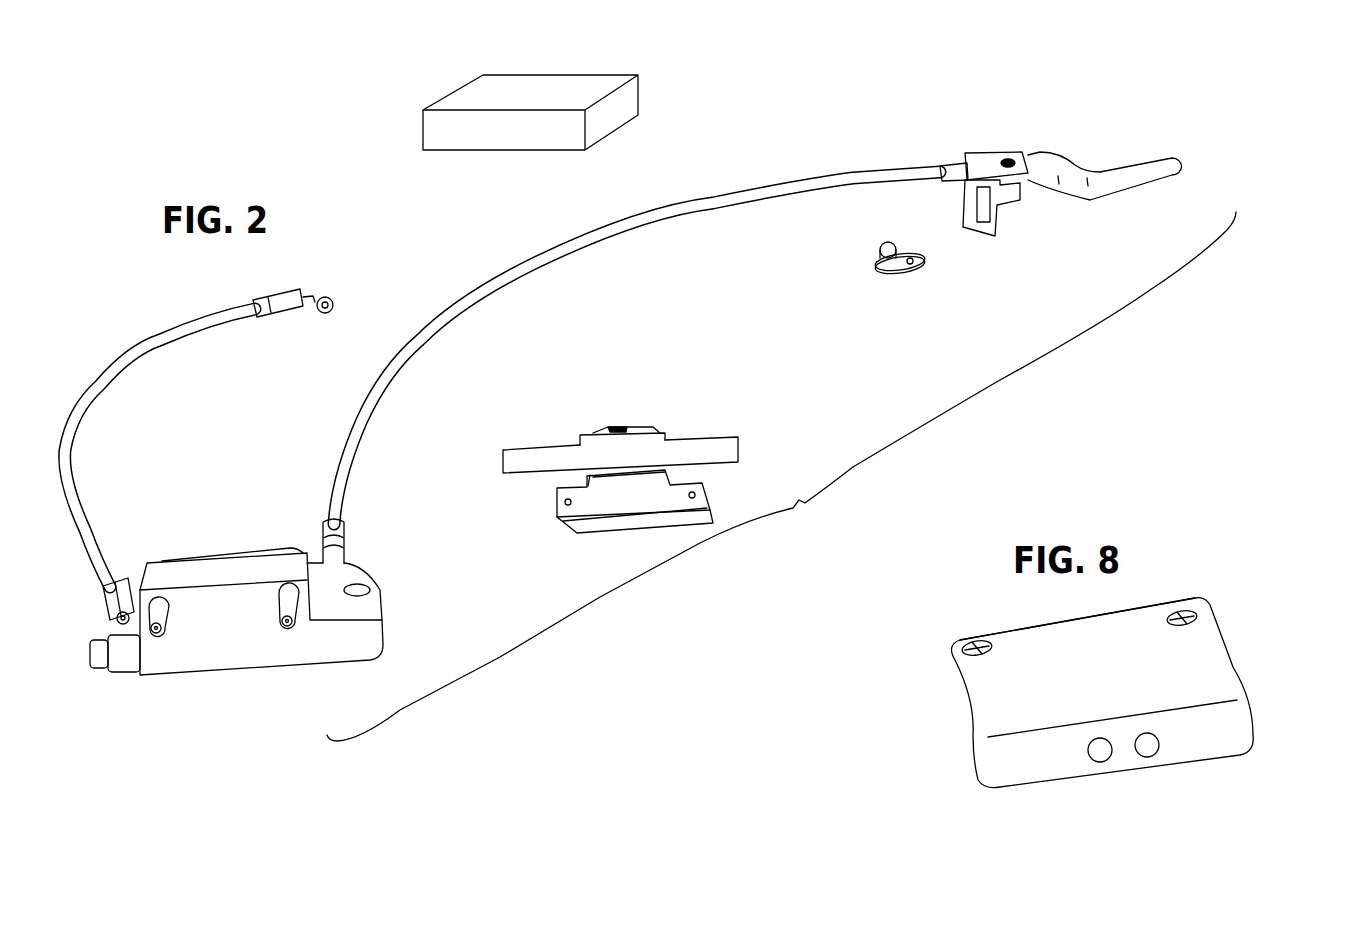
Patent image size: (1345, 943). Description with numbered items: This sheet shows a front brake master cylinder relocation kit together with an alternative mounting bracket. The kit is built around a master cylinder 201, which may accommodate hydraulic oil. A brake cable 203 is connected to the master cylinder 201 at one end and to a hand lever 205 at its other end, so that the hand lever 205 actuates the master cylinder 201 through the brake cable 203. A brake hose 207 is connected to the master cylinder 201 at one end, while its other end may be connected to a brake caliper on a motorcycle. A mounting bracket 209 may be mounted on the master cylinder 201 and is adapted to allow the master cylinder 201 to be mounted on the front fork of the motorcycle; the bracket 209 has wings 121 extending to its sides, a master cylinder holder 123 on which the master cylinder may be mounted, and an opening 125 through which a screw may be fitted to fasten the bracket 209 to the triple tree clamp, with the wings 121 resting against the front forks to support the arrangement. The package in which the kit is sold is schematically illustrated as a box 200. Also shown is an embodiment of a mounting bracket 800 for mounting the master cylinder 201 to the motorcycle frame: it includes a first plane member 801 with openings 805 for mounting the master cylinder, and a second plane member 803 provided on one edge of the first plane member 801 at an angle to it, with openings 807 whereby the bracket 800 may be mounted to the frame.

In FIG. 2, the box 200 is at (607, 120).
In FIG. 2, the master cylinder 201 is at (233, 643).
In FIG. 2, the brake cable 203 is at (488, 287).
In FIG. 2, the hand lever 205 is at (1073, 188).
In FIG. 2, the brake hose 207 is at (192, 335).
In FIG. 2, the mounting bracket 209 is at (648, 443).
In FIG. 2, the wings 121 is at (513, 453).
In FIG. 2, the master cylinder holder 123 is at (562, 523).
In FIG. 2, the opening 125 is at (618, 427).
In FIG. 8, the mounting bracket 800 is at (1247, 770).
In FIG. 8, the first plane member 801 is at (1090, 657).
In FIG. 8, the second plane member 803 is at (1028, 763).
In FIG. 8, the openings 805 is at (967, 640).
In FIG. 8, the openings 807 is at (1147, 753).